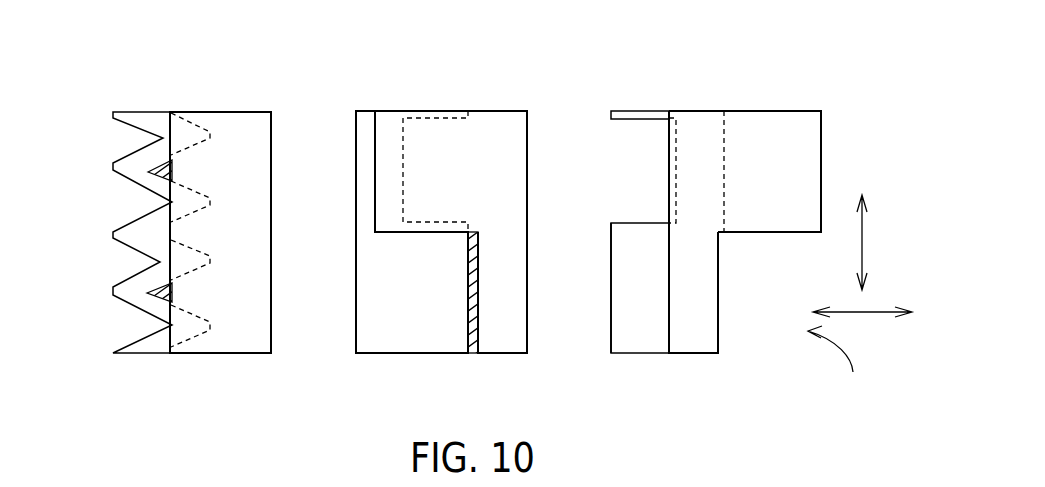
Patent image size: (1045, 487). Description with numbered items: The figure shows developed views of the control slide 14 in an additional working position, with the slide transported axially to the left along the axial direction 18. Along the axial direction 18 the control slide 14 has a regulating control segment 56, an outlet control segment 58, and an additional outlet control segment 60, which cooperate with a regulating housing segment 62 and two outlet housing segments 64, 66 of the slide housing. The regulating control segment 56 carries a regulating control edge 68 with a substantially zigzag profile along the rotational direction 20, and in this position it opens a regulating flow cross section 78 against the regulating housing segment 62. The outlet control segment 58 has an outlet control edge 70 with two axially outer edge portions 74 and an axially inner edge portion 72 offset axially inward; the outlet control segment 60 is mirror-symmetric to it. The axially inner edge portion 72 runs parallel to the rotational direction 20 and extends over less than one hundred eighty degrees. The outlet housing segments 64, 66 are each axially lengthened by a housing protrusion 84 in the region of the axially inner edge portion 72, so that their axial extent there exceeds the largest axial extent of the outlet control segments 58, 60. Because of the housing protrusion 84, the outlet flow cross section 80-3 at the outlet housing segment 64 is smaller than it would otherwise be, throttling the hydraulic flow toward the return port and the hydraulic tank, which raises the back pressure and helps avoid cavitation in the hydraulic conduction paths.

The control slide 14 is at (843, 364).
The axial direction 18 is at (875, 312).
The rotational direction 20 is at (862, 255).
The regulating control segment 56 is at (138, 366).
The outlet control segment 58 is at (387, 365).
The additional outlet control segment 60 is at (637, 366).
The regulating housing segment 62 is at (258, 366).
The outlet housing segment 64 is at (508, 365).
The outlet housing segment 66 is at (705, 366).
The regulating control edge 68 is at (199, 366).
The outlet control edge 70 is at (458, 303).
The axially inner edge portion 72 is at (405, 153).
The axially outer edge portion 74 is at (468, 333).
The regulating flow cross section 78 is at (172, 112).
The outlet flow cross section 80-3 is at (468, 258).
The housing protrusion 84 is at (390, 138).